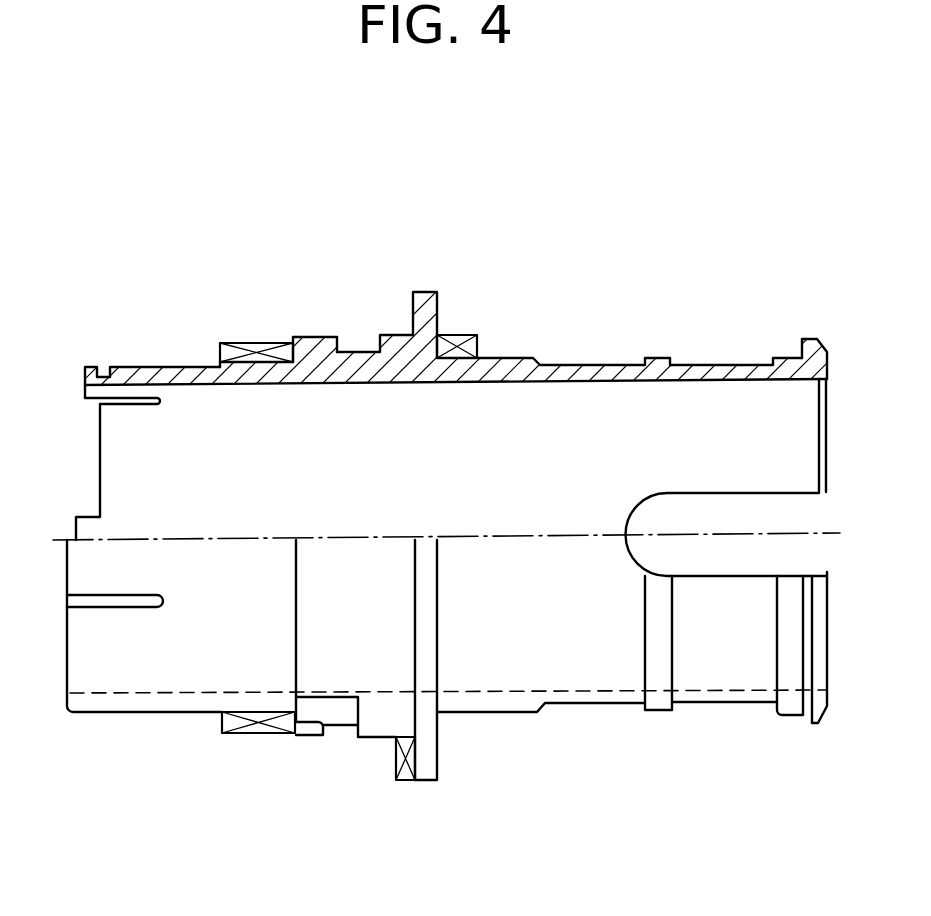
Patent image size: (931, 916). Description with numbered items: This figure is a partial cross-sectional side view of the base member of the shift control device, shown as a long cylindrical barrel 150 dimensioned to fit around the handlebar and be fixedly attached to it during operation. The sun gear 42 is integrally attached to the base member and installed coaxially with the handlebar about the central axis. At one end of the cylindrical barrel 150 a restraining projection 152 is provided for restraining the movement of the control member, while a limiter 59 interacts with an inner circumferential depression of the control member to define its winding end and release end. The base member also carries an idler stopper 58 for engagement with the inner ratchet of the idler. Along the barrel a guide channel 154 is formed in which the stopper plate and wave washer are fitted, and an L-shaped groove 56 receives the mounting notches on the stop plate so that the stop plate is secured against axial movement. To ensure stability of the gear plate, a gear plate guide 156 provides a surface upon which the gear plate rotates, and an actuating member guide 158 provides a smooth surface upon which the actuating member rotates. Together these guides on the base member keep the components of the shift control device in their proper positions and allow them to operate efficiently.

The sun gear 42 is at (260, 342).
The L-shaped groove 56 is at (342, 712).
The idler stopper 58 is at (403, 773).
The limiter 59 is at (460, 333).
The cylindrical barrel 150 is at (578, 362).
The restraining projection 152 is at (810, 340).
The guide channel 154 is at (360, 351).
The gear plate guide 156 is at (318, 337).
The actuating member guide 158 is at (157, 362).